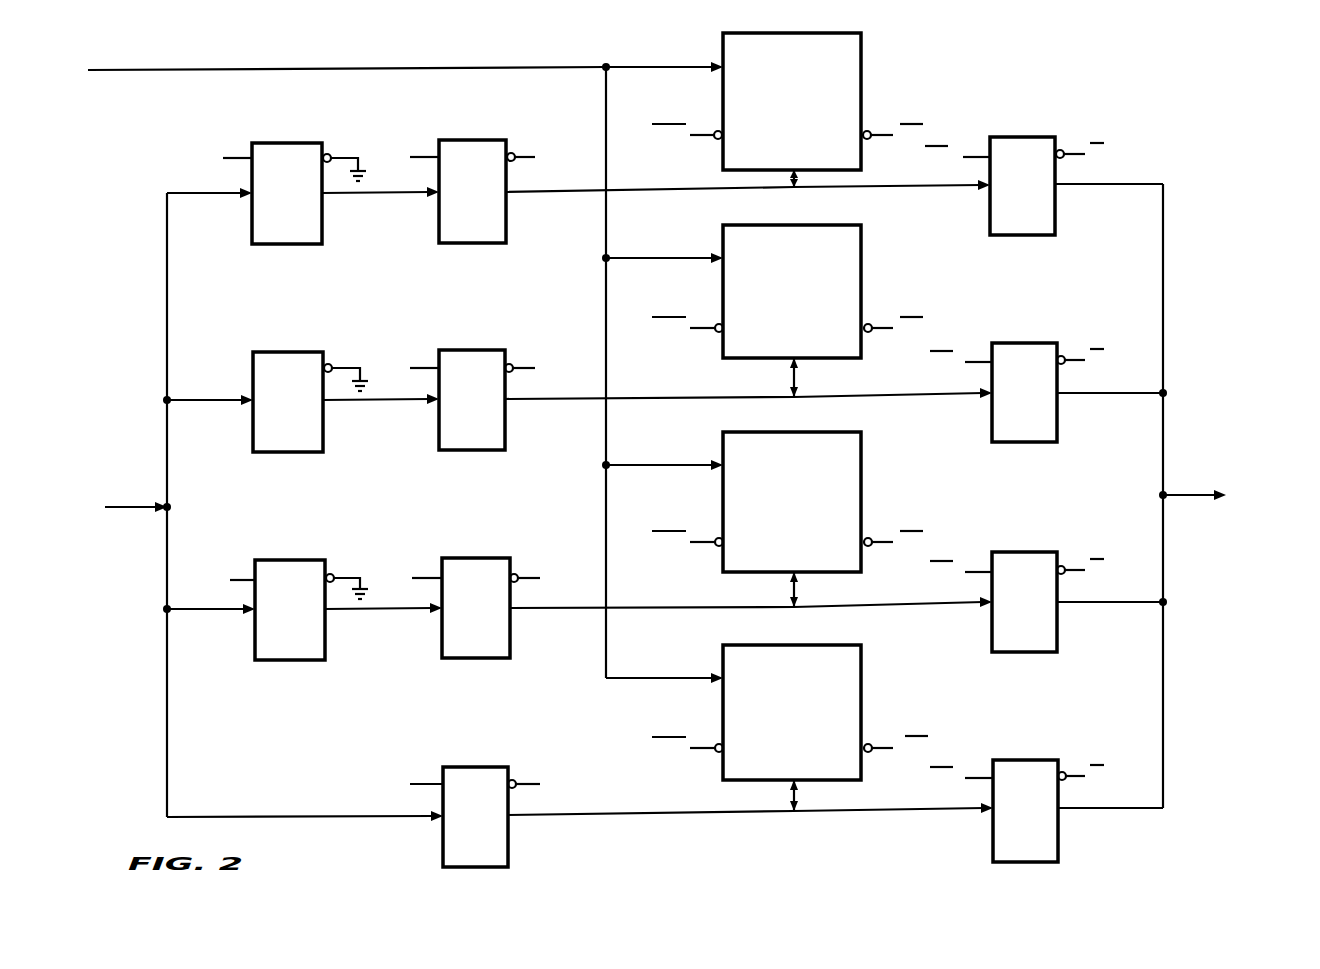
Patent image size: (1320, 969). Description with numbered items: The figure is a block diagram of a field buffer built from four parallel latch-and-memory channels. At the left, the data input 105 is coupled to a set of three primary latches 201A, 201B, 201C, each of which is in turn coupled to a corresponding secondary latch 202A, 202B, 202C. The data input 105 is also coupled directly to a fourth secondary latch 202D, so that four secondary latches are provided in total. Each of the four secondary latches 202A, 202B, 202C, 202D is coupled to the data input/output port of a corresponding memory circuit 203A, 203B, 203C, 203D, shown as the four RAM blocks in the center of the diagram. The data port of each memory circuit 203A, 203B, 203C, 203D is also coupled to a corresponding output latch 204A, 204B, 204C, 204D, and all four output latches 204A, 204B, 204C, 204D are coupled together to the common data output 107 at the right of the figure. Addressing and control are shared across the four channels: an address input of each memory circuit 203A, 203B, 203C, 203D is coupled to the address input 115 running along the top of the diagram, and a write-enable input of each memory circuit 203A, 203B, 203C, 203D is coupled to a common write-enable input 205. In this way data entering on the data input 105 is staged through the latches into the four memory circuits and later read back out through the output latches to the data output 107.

The data input 105 is at (118, 504).
The data output 107 is at (1205, 495).
The address input 115 is at (184, 69).
The primary latch 201A is at (320, 143).
The primary latch 201B is at (336, 334).
The primary latch 201C is at (342, 543).
The secondary latch 202A is at (500, 140).
The secondary latch 202B is at (498, 350).
The secondary latch 202C is at (505, 558).
The fourth secondary latch 202D is at (498, 767).
The memory circuit 203A is at (862, 52).
The memory circuit 203B is at (862, 244).
The memory circuit 203C is at (862, 450).
The memory circuit 203D is at (862, 662).
The output latch 204A is at (1050, 137).
The output latch 204B is at (1050, 343).
The output latch 204C is at (1050, 552).
The output latch 204D is at (1076, 733).
The common write-enable input 205 is at (678, 146).